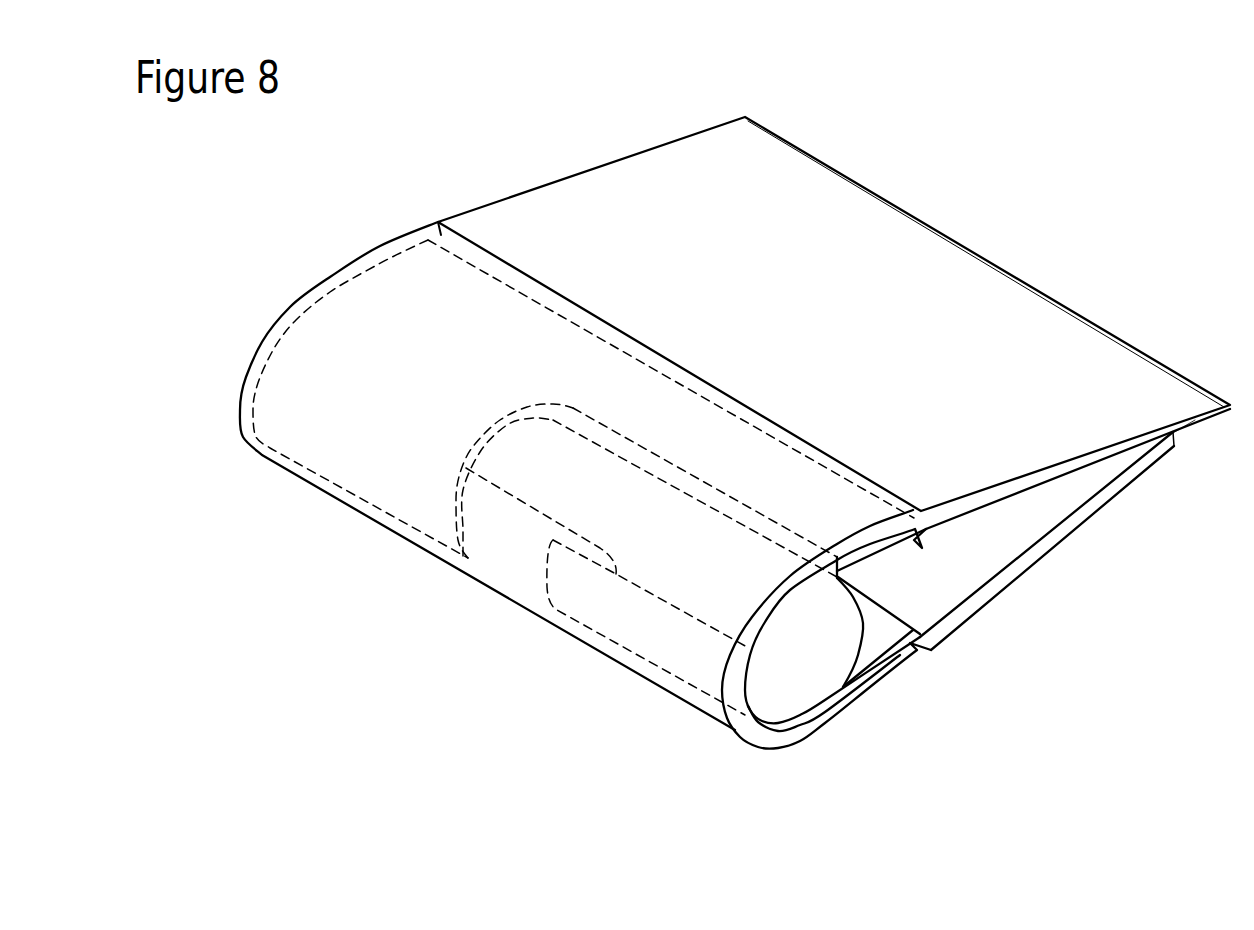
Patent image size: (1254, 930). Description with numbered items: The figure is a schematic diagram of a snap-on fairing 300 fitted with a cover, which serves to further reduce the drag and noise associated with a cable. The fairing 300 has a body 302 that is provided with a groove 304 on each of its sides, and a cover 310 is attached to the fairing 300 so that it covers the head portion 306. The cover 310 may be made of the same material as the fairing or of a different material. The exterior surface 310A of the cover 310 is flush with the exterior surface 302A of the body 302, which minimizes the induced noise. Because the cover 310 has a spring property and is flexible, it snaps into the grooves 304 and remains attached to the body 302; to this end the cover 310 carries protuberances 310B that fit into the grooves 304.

The fairing 300 is at (740, 53).
The body 302 is at (582, 207).
The exterior surface of the body 302A is at (874, 430).
The groove 304 is at (921, 513).
The head portion 306 is at (333, 415).
The cover 310 is at (583, 588).
The exterior surface of the cover 310A is at (717, 442).
The protuberances 310B is at (918, 508).